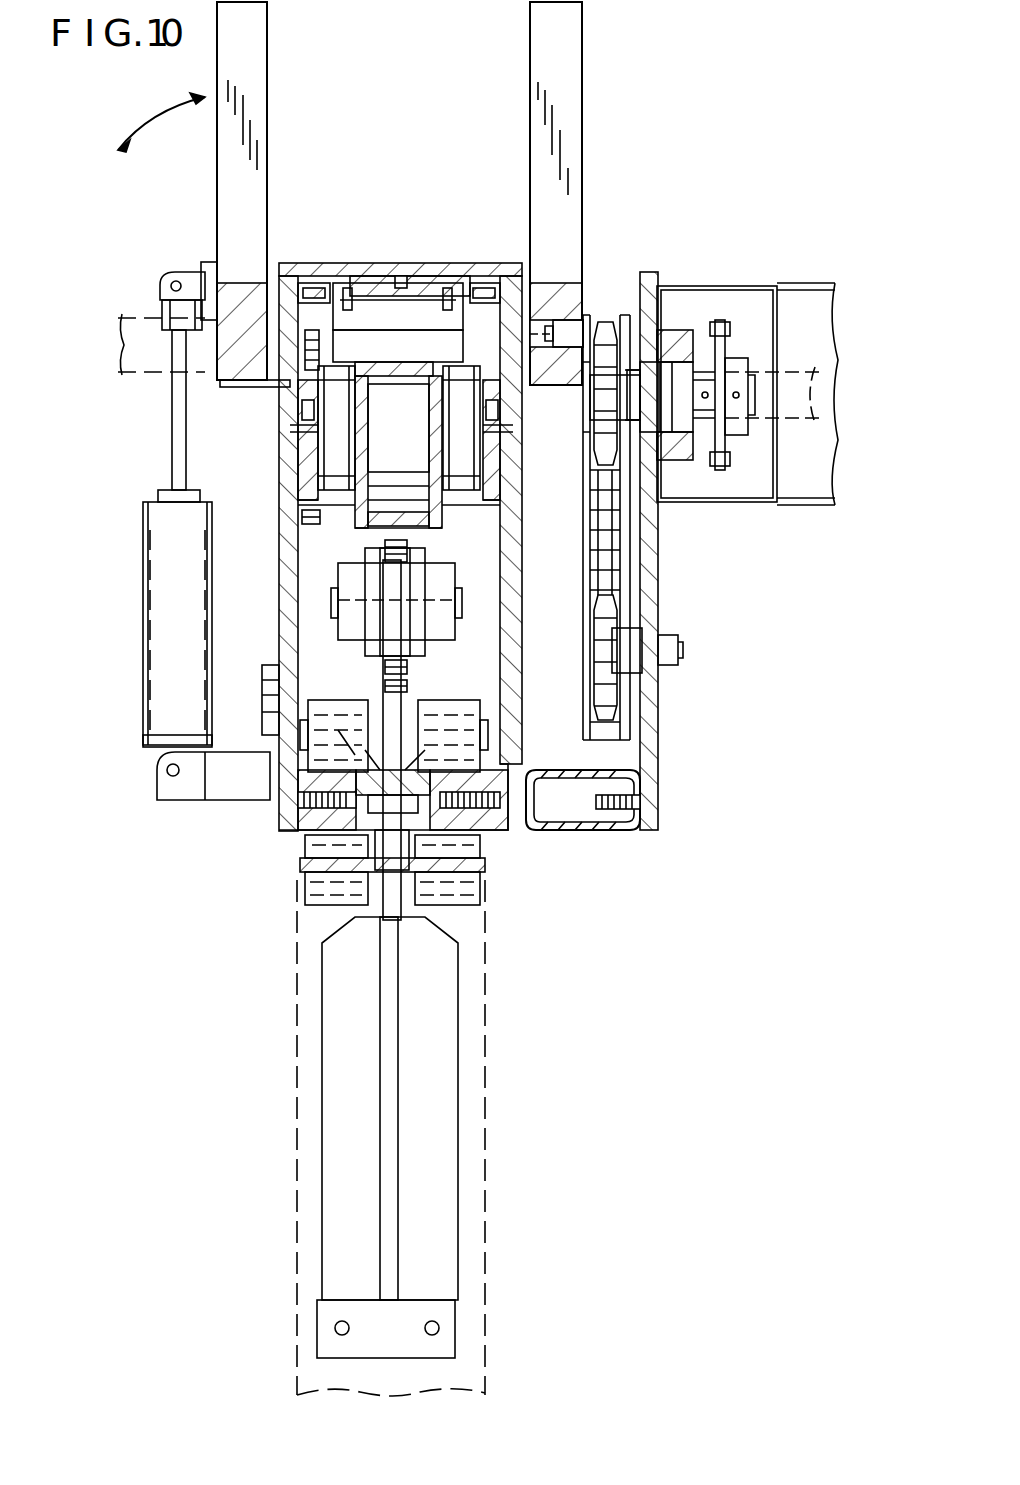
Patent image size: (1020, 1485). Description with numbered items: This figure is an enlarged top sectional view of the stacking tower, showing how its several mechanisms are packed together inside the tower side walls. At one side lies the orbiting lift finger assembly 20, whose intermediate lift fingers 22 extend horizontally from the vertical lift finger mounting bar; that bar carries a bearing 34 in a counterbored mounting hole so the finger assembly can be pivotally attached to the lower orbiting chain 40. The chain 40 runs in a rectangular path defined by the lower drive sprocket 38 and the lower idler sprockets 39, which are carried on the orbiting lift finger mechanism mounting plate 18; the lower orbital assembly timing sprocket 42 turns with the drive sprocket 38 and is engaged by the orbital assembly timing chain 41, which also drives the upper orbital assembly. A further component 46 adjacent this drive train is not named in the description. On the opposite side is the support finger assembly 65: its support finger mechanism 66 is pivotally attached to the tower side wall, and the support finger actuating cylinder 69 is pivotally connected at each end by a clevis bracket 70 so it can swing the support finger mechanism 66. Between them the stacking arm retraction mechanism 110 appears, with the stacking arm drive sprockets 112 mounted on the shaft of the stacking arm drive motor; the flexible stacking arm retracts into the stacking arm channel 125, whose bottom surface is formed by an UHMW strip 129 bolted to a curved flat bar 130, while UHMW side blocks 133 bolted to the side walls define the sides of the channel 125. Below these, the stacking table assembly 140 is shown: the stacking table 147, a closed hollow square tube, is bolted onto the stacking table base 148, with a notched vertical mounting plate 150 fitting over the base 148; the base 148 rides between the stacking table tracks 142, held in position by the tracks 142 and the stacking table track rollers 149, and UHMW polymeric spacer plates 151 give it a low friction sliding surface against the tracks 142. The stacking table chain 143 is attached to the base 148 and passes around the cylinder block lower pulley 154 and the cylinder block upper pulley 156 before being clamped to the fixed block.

The orbiting lift finger mechanism mounting plate 18 is at (659, 740).
The orbiting lift finger assembly 20 is at (680, 475).
The intermediate lift fingers 22 is at (583, 45).
The bearing 34 is at (572, 320).
The lower drive sprocket 38 is at (605, 322).
The lower idler sprockets 39 is at (610, 676).
The lower orbiting chain 40 is at (630, 560).
The orbital assembly timing chain 41 is at (720, 320).
The lower orbital assembly timing sprocket 42 is at (728, 360).
The bearing 46 is at (680, 362).
The support finger assembly 65 is at (158, 418).
The support finger mechanism 66 is at (268, 40).
The support finger actuating cylinder 69 is at (142, 655).
The clevis bracket 70 is at (158, 286).
The stacking arm retraction mechanism 110 is at (290, 545).
The stacking arm drive sprockets 112 is at (303, 370).
The stacking arm channel 125 is at (378, 300).
The UHMW strip 129 is at (412, 285).
The flat bar 130 is at (392, 372).
The UHMW side blocks 133 is at (310, 283).
The stacking table assembly 140 is at (492, 858).
The stacking table track 142 is at (305, 838).
The stacking table chain 143 is at (408, 668).
The stacking table 147 is at (445, 1115).
The stacking table base 148 is at (400, 1080).
The stacking table track rollers 149 is at (328, 708).
The vertical mounting plate 150 is at (405, 912).
The UHMW polymeric spacer plates 151 is at (395, 782).
The cylinder block lower pulley 154 is at (408, 555).
The cylinder block upper pulley 156 is at (418, 580).